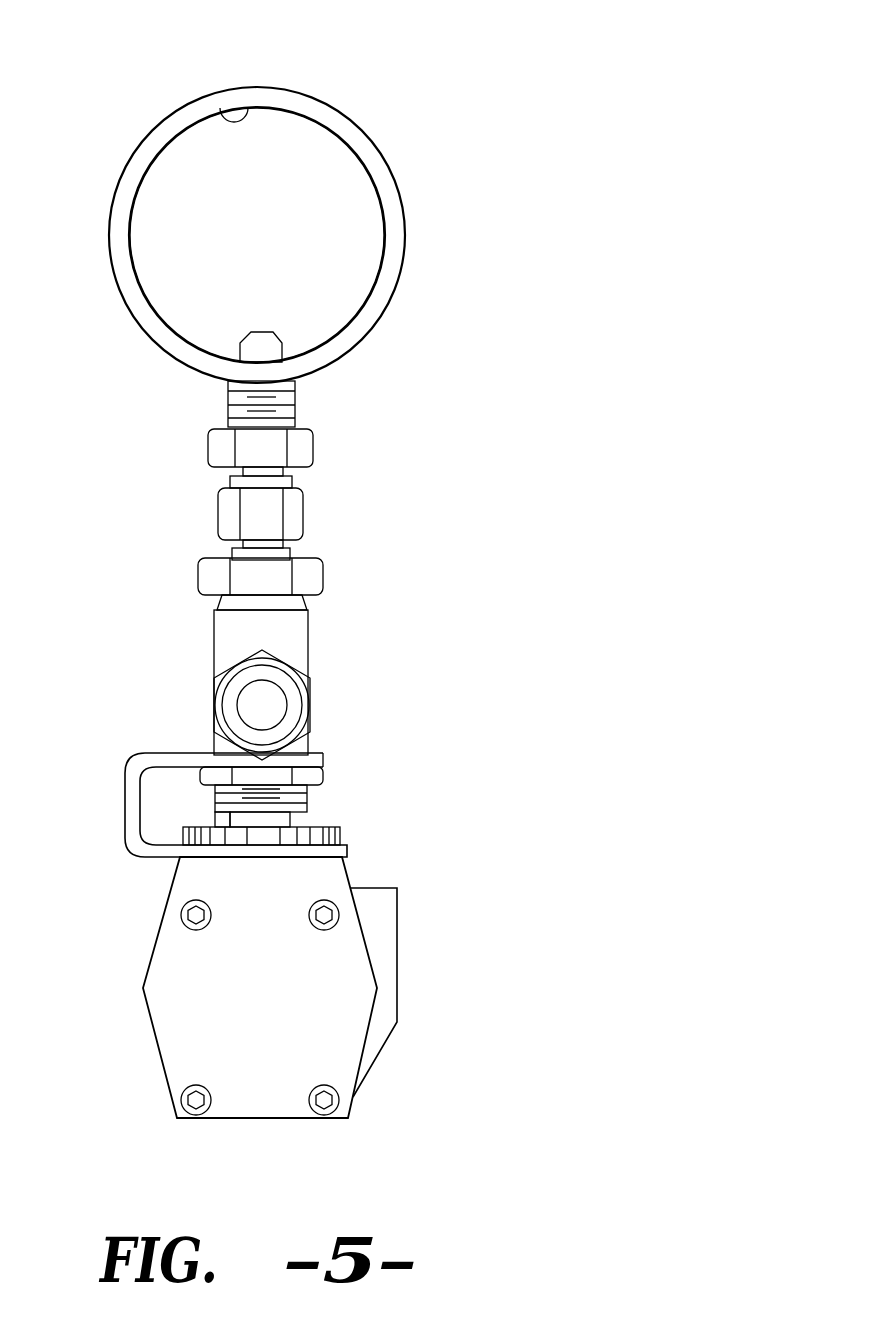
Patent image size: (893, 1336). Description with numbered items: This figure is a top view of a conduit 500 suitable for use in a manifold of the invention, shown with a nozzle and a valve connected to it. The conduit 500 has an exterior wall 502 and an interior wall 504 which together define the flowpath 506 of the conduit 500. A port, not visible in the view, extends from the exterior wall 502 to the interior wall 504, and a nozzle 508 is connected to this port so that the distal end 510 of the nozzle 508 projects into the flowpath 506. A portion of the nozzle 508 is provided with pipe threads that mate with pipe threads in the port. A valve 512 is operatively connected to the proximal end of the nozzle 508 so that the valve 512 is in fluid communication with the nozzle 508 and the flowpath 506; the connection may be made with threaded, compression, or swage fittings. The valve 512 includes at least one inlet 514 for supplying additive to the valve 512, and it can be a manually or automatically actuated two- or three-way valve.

The conduit 500 is at (321, 560).
The exterior wall 502 is at (393, 153).
The interior wall 504 is at (222, 112).
The flowpath 506 is at (195, 170).
The nozzle 508 is at (181, 416).
The distal end 510 is at (277, 332).
The valve 512 is at (469, 469).
The inlet 514 is at (252, 697).